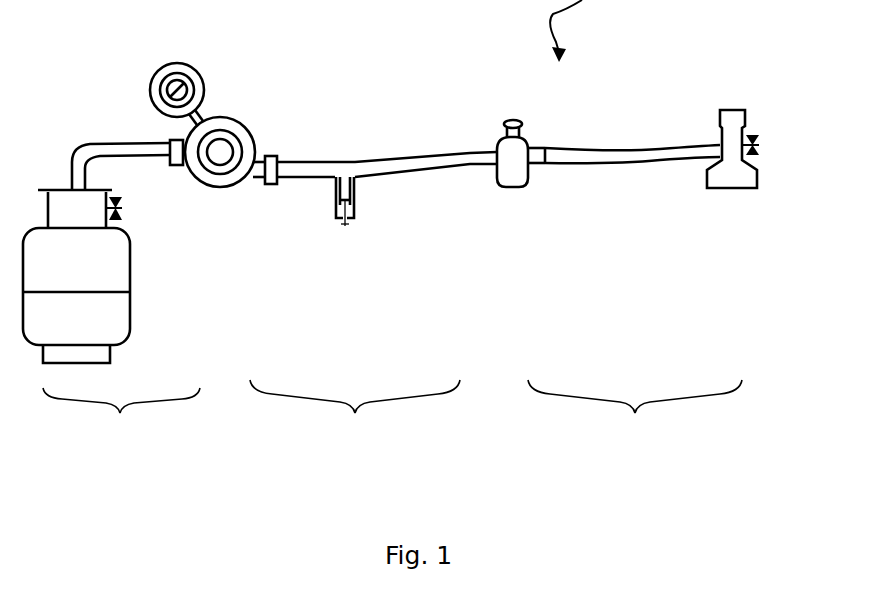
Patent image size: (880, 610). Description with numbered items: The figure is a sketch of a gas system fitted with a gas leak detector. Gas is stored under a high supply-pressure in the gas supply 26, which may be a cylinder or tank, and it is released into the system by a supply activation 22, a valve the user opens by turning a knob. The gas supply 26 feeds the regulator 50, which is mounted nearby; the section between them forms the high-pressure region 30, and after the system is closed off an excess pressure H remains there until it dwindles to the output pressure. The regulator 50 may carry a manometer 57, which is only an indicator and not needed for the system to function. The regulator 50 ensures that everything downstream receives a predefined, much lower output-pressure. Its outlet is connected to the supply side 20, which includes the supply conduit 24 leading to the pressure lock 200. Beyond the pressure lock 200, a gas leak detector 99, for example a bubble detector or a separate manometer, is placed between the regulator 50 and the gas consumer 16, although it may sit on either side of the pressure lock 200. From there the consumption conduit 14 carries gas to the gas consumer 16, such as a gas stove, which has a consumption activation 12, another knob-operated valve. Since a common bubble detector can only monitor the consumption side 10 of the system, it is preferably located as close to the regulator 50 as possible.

The consumption side 10 is at (635, 414).
The consumption activation 12 is at (752, 135).
The consumption conduit 14 is at (613, 157).
The gas consumer 16 is at (732, 173).
The supply side 20 is at (355, 414).
The supply activation 22 is at (123, 202).
The supply conduit 24 is at (372, 168).
The gas supply 26 is at (95, 275).
The high-pressure region 30 is at (121, 418).
The regulator 50 is at (220, 150).
The manometer 57 is at (180, 72).
The gas leak detector 99 is at (512, 172).
The pressure lock 200 is at (342, 213).
The excess pressure H is at (125, 155).